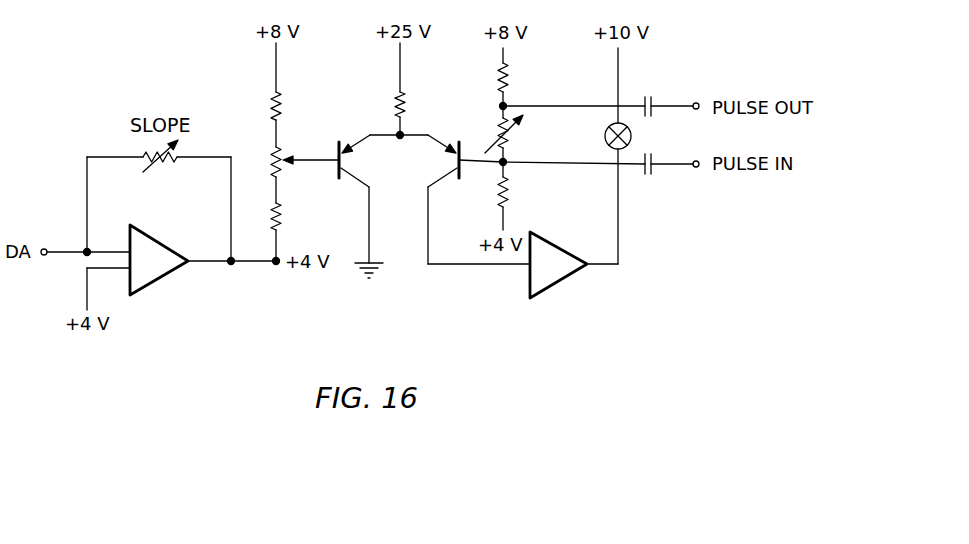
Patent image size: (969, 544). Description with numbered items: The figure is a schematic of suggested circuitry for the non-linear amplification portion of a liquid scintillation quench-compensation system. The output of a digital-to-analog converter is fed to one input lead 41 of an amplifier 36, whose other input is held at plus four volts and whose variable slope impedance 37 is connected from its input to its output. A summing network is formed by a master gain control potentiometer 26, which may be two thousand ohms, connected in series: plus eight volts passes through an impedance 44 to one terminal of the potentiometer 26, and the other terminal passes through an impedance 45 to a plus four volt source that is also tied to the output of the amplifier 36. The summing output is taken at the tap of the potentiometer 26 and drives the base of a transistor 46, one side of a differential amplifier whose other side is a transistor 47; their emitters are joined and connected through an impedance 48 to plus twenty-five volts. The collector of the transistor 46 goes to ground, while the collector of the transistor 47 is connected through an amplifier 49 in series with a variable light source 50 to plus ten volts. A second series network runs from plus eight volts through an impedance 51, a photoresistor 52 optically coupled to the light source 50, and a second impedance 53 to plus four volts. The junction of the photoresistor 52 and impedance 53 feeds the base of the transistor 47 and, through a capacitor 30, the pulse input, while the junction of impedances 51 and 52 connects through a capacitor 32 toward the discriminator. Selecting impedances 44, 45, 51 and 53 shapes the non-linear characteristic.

The master gain control potentiometer 26 is at (272, 150).
The capacitor 30 is at (652, 172).
The capacitor 32 is at (655, 103).
The amplifier 36 is at (173, 272).
The variable slope impedance 37 is at (169, 164).
The input lead 41 is at (85, 250).
The impedance 44 is at (272, 100).
The impedance 45 is at (283, 217).
The transistor 46 is at (338, 148).
The transistor 47 is at (460, 178).
The impedance 48 is at (398, 94).
The amplifier 49 is at (565, 246).
The variable light source 50 is at (632, 137).
The impedance 51 is at (498, 70).
The photoresistor 52 is at (512, 138).
The second impedance 53 is at (512, 187).